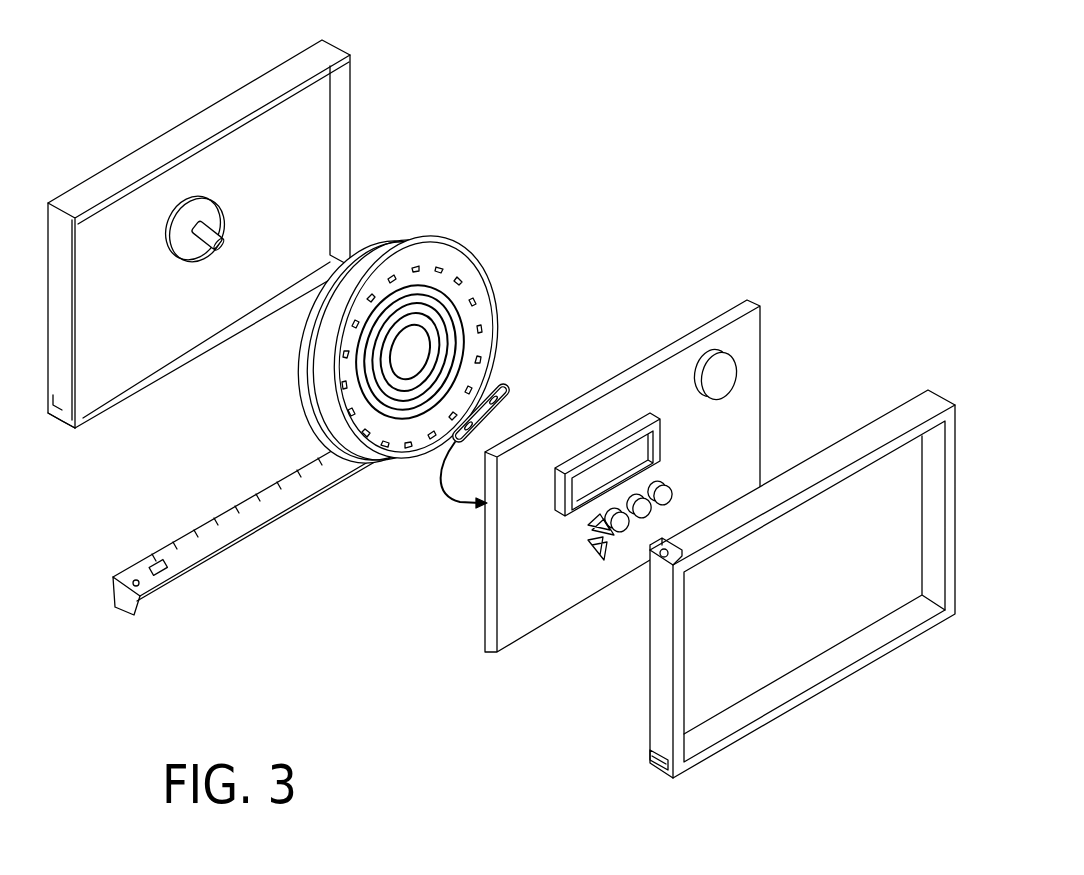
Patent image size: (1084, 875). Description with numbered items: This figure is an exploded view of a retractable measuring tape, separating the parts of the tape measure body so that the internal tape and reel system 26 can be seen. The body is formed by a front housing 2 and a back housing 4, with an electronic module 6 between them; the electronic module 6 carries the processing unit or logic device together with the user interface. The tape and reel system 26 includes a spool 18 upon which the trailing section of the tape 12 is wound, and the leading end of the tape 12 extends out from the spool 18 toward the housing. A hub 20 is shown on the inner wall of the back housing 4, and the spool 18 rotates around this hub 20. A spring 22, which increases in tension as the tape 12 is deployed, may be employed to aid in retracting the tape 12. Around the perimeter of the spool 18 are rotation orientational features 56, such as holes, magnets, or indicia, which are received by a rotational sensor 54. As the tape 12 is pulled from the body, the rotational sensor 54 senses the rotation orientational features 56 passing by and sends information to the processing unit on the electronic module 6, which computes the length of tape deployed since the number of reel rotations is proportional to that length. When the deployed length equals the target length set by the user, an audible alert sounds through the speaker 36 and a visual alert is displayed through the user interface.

The front housing 2 is at (872, 420).
The back housing 4 is at (132, 292).
The electronic module 6 is at (535, 612).
The tape 12 is at (197, 530).
The spool 18 is at (300, 372).
The hub 20 is at (219, 231).
The spring 22 is at (363, 411).
The tape and reel system 26 is at (394, 291).
The speaker 36 is at (731, 362).
The rotational sensor 54 is at (501, 389).
The rotation orientational features 56 is at (483, 315).